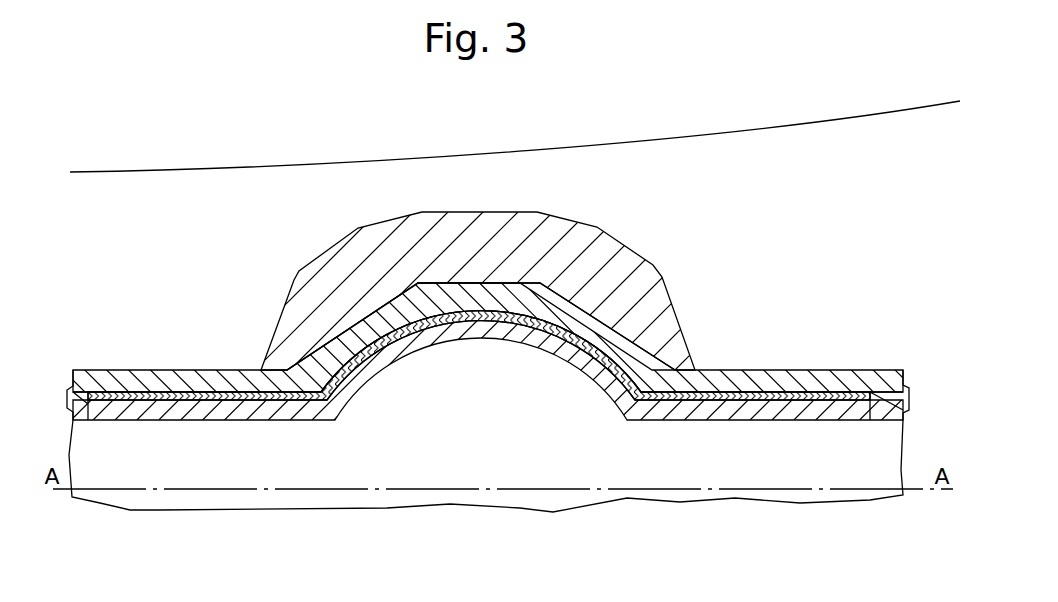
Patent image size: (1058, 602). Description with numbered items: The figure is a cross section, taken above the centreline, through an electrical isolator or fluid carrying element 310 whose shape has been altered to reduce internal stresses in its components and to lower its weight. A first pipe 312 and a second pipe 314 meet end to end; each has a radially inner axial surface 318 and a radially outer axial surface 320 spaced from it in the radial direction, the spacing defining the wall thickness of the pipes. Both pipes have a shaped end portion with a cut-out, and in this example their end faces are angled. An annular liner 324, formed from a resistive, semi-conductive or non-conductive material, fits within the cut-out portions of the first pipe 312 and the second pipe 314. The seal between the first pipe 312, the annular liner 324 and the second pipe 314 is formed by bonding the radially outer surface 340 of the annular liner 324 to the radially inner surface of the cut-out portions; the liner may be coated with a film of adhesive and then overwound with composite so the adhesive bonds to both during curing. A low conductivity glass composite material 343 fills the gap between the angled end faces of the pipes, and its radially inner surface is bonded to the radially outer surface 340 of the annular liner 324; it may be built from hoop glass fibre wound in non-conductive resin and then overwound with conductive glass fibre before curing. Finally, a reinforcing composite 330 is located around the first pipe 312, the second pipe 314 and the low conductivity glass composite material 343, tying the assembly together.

The electrical isolator or fluid carrying element 310 is at (370, 198).
The first pipe 312 is at (80, 390).
The second pipe 314 is at (887, 397).
The radially inner axial surface 318 is at (891, 420).
The radially outer axial surface 320 is at (763, 368).
The annular liner 324 is at (692, 398).
The reinforcing composite 330 is at (592, 268).
The radially outer surface of the annular liner 340 is at (168, 397).
The low conductivity glass composite material 343 is at (483, 290).